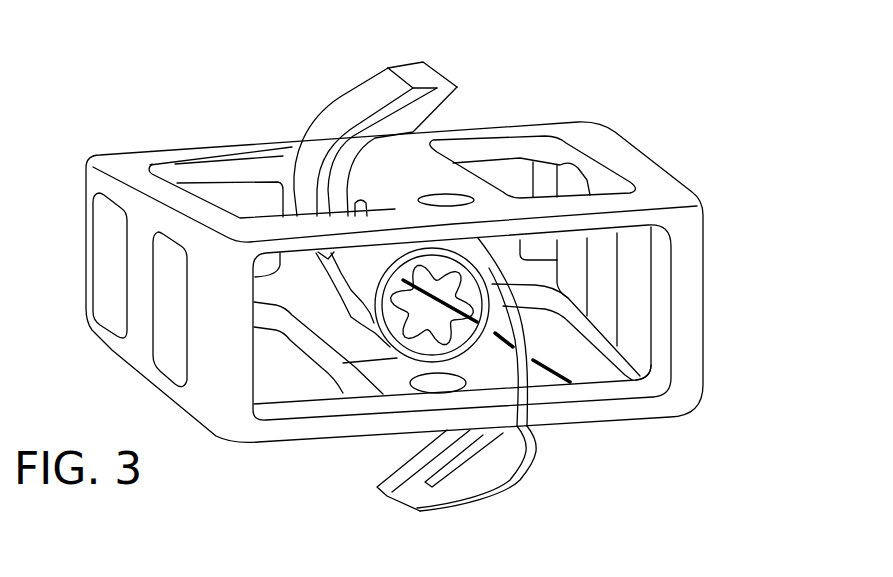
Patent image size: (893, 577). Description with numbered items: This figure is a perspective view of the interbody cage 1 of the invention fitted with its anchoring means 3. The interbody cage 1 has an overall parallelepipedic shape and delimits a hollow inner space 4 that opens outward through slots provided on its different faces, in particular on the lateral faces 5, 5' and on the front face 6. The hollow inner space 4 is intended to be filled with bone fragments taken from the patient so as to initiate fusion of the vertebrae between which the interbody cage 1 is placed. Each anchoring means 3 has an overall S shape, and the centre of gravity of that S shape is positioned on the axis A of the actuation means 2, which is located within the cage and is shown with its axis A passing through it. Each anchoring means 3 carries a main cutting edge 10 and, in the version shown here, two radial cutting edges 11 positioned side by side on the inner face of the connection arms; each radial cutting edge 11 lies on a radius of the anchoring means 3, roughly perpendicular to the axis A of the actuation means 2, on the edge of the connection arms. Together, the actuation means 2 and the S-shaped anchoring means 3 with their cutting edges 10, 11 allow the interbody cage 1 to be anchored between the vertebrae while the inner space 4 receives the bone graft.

The interbody cage 1 is at (245, 87).
The actuation means 2 is at (345, 363).
The anchoring means 3 is at (495, 99).
The hollow inner space 4 is at (522, 170).
The lateral face 5 is at (418, 252).
The lateral face 5' is at (674, 421).
The front face 6 is at (705, 241).
The main cutting edge 10 is at (440, 73).
The radial cutting edge 11 is at (413, 448).
The axis of the actuation means A is at (540, 360).